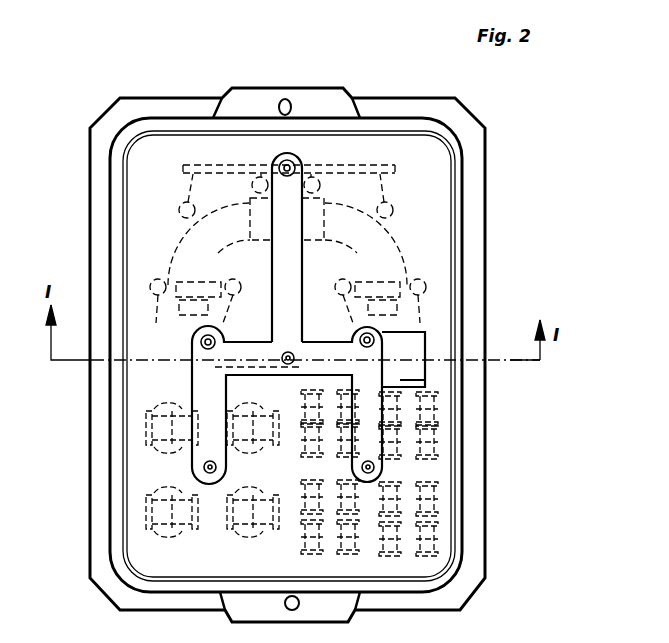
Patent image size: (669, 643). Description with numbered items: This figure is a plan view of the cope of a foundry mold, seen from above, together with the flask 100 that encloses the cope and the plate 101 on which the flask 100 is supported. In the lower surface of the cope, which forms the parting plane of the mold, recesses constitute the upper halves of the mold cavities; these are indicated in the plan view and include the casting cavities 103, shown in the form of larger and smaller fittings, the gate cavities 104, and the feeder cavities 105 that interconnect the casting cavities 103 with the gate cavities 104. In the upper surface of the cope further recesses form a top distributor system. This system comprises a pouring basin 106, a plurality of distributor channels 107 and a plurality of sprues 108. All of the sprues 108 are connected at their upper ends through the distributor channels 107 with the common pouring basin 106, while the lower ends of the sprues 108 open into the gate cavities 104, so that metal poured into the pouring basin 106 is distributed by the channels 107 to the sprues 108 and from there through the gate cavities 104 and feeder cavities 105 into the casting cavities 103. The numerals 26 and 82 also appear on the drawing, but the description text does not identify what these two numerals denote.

The pivot pin 26 is at (208, 343).
The rotary switch member 82 is at (187, 233).
The flask 100 is at (455, 205).
The plate 101 is at (475, 140).
The casting cavities 103 is at (165, 507).
The gate cavities 104 is at (420, 467).
The feeder cavities 105 is at (427, 438).
The pouring basin 106 is at (417, 347).
The distributor channels 107 is at (275, 158).
The sprues 108 is at (291, 160).